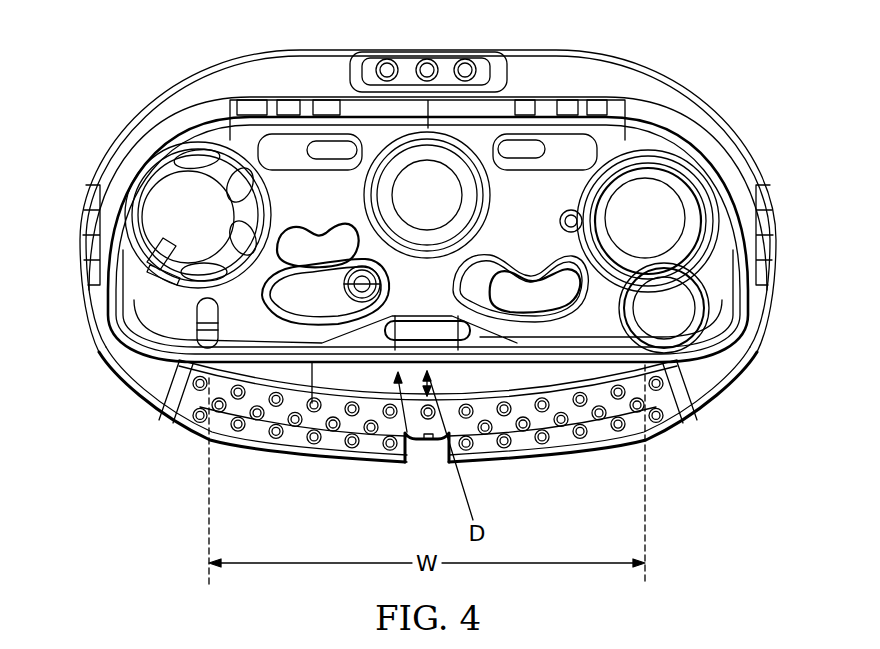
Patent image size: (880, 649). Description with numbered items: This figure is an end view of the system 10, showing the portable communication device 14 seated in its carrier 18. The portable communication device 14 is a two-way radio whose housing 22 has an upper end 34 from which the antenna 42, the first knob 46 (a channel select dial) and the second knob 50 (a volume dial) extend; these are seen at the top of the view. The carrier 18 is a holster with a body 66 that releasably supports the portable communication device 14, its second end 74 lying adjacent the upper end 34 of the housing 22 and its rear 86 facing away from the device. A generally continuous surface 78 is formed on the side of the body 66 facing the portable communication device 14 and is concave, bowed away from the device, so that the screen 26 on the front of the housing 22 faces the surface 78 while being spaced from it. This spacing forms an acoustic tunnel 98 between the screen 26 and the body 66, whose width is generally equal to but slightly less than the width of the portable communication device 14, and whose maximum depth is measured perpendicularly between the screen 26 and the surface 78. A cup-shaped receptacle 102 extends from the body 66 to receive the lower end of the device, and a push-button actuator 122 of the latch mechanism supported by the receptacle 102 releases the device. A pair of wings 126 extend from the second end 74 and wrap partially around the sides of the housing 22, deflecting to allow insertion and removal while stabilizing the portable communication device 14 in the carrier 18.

The system 10 is at (676, 46).
The portable communication device 14 is at (602, 125).
The carrier 18 is at (132, 130).
The housing 22 is at (294, 133).
The screen 26 is at (314, 405).
The upper end 34 is at (573, 173).
The antenna 42 is at (667, 198).
The first knob 46 is at (405, 183).
The second knob 50 is at (158, 203).
The body 66 is at (132, 400).
The second end 74 is at (557, 443).
The surface 78 is at (497, 398).
The rear 86 is at (368, 460).
The acoustic tunnel 98 is at (412, 445).
The receptacle 102 is at (318, 58).
The actuator 122 is at (413, 62).
The wings 126 is at (78, 248).